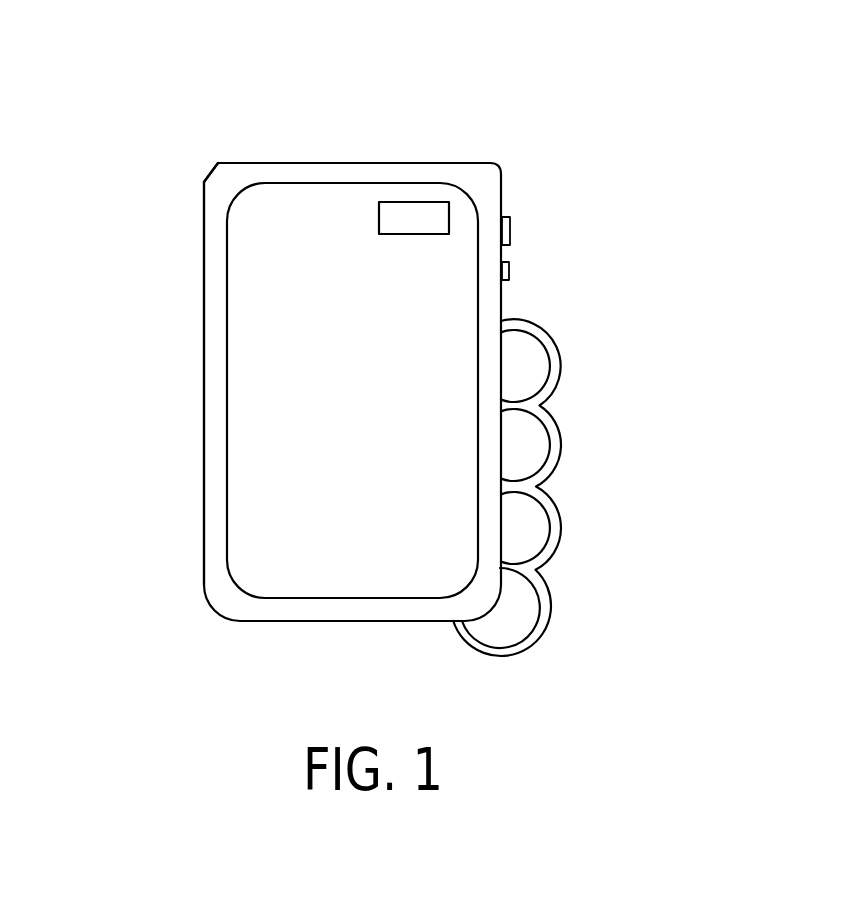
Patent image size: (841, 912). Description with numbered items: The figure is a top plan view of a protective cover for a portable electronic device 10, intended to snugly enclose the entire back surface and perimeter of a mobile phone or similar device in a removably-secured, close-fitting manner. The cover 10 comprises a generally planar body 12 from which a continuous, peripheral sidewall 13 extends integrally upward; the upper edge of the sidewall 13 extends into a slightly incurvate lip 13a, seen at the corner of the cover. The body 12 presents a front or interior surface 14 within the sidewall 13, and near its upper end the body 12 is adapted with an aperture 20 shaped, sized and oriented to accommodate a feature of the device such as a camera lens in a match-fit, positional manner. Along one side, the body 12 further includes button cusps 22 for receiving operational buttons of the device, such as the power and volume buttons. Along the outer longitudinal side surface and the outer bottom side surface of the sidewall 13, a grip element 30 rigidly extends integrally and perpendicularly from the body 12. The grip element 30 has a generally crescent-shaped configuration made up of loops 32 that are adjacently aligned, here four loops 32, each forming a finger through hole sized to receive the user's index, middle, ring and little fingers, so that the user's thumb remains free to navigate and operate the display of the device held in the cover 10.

The protective cover for a portable electronic device 10 is at (276, 99).
The body 12 is at (178, 328).
The sidewall 13 is at (205, 397).
The lip 13a is at (220, 183).
The interior surface 14 is at (355, 366).
The apertures 20 is at (417, 212).
The button cusps 22 is at (509, 270).
The grip element 30 is at (582, 386).
The loops 32 is at (560, 515).